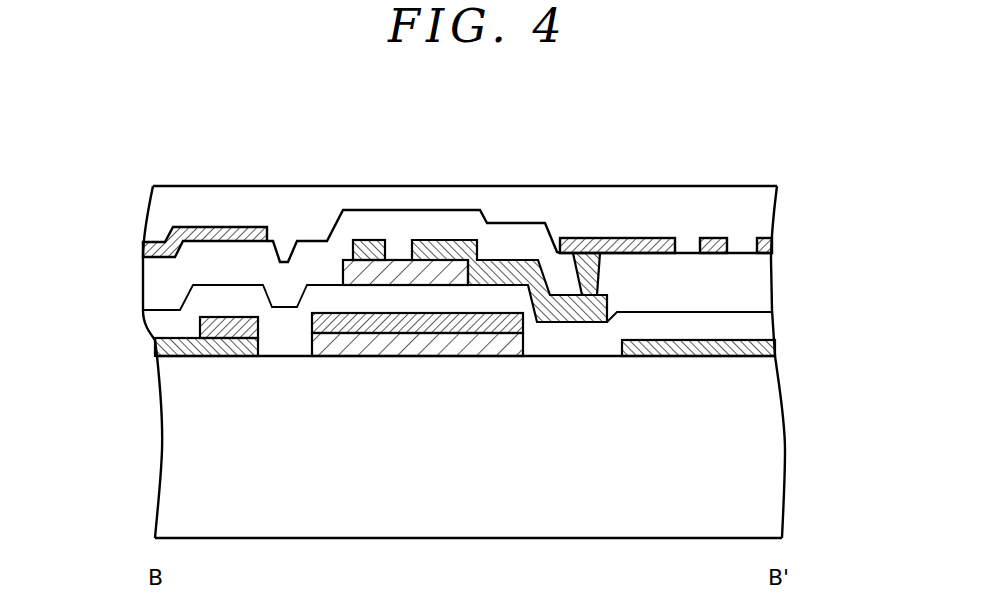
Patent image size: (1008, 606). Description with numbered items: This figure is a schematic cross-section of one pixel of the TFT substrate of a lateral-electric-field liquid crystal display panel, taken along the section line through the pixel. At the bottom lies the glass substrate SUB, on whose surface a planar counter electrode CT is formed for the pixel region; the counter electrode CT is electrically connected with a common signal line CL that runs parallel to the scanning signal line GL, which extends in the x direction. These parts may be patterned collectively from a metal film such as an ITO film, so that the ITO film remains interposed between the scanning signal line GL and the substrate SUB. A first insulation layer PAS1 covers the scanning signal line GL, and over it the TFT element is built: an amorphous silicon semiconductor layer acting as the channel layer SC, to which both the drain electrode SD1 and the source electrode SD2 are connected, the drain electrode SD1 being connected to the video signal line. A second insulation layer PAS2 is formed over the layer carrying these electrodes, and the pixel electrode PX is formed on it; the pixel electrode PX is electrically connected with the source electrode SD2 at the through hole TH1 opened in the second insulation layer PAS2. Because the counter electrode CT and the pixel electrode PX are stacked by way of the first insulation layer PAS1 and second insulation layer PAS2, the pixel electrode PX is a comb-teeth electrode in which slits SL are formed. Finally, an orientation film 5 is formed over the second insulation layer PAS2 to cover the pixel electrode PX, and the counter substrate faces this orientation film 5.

The glass substrate SUB is at (540, 521).
The orientation film 5 is at (282, 210).
The counter electrode CT is at (189, 357).
The common signal line CL is at (237, 352).
The scanning signal line GL is at (465, 323).
The ITO film ITO is at (352, 327).
The first insulation layer PAS1 is at (175, 325).
The second insulation layer PAS2 is at (175, 263).
The channel layer SC is at (398, 260).
The drain electrode SD1 is at (368, 240).
The source electrode SD2 is at (460, 240).
The through hole TH1 is at (604, 265).
The pixel electrode PX is at (177, 226).
The slit SL is at (687, 238).